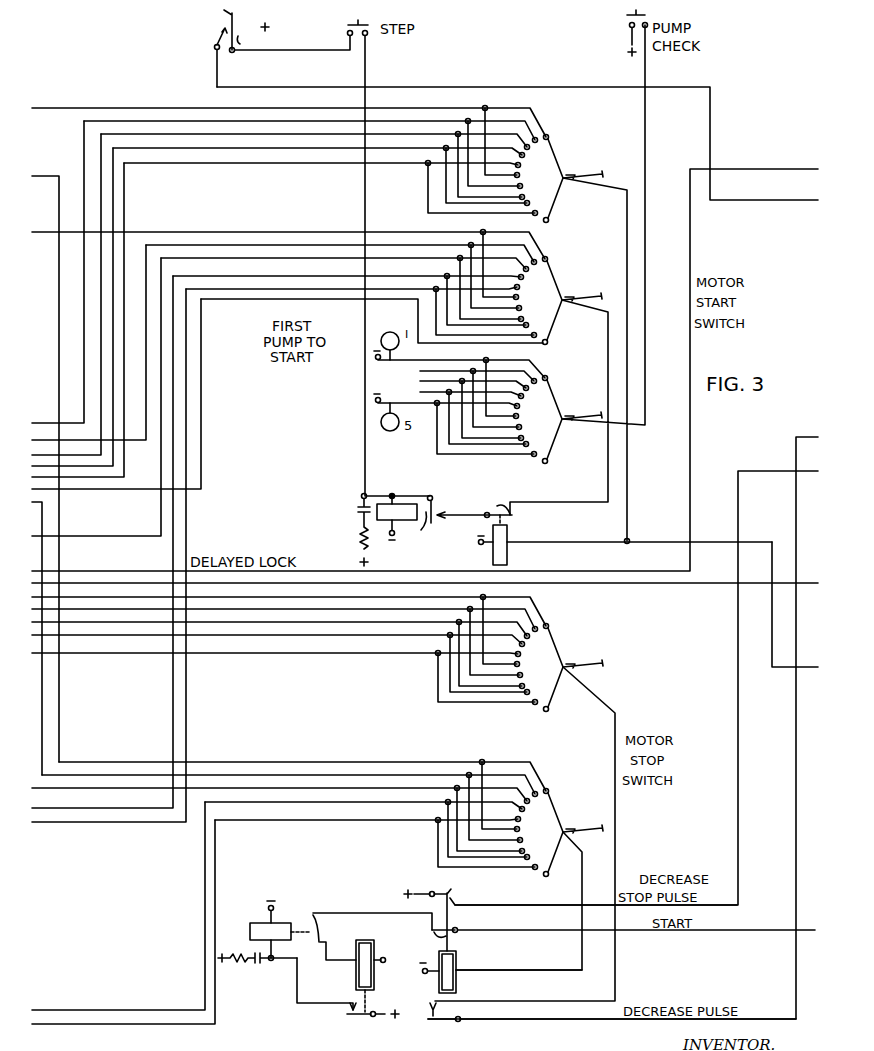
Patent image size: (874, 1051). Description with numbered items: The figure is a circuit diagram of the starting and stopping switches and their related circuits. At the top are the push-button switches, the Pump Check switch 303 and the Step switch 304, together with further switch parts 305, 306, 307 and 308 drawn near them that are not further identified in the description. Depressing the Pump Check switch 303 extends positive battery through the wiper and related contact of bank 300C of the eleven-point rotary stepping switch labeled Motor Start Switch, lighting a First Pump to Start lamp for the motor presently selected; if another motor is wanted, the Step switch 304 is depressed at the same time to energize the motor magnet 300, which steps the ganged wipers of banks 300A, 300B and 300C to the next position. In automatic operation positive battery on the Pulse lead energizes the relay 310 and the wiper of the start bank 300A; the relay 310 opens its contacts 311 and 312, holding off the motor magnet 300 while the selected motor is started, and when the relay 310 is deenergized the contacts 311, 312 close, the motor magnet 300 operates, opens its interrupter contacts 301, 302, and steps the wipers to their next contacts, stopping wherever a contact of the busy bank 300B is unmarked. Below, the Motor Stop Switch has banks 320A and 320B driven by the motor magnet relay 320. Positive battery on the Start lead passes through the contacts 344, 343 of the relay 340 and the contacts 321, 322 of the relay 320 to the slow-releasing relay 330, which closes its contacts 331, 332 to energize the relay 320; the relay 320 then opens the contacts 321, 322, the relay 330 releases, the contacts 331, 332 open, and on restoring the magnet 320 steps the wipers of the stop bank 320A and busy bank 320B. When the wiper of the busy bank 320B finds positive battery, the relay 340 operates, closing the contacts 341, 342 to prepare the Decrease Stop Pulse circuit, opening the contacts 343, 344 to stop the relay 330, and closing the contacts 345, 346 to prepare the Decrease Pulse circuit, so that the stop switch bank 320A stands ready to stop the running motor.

The motor magnet 300 is at (394, 532).
The start switch bank 300A is at (325, 171).
The busy switch bank 300B is at (323, 294).
The first-pump-to-start lamp bank 300C is at (498, 417).
The interrupter contact 301 is at (438, 504).
The interrupter contact 302 is at (432, 531).
The pump check push-button switch 303 is at (620, 33).
The step push-button switch 304 is at (301, 258).
The switch armature 305 is at (199, 26).
The switch blade 306 is at (233, 14).
The switch contact 307 is at (240, 30).
The switch contact 308 is at (213, 42).
The relay 310 is at (625, 540).
The relay contact 311 is at (504, 506).
The relay contact 312 is at (474, 507).
The motor magnet relay 320 is at (257, 921).
The stop switch bank 320A is at (322, 660).
The busy switch bank 320B is at (317, 825).
The relay contact 321 is at (361, 919).
The relay contact 322 is at (326, 976).
The slow-releasing relay 330 is at (375, 966).
The relay contact 331 is at (345, 1008).
The relay contact 332 is at (366, 1027).
The relay 340 is at (501, 972).
The relay contact 341 is at (445, 916).
The relay contact 342 is at (593, 900).
The relay contact 343 is at (623, 923).
The relay contact 344 is at (442, 938).
The relay contact 345 is at (443, 1001).
The relay contact 346 is at (445, 1022).